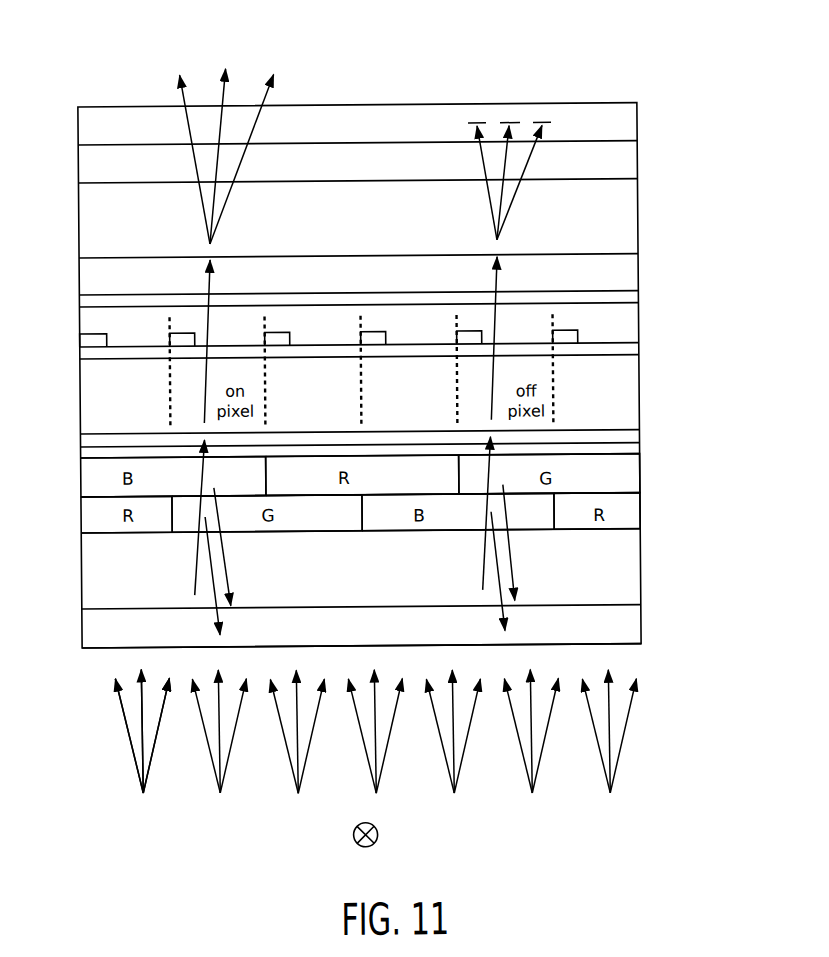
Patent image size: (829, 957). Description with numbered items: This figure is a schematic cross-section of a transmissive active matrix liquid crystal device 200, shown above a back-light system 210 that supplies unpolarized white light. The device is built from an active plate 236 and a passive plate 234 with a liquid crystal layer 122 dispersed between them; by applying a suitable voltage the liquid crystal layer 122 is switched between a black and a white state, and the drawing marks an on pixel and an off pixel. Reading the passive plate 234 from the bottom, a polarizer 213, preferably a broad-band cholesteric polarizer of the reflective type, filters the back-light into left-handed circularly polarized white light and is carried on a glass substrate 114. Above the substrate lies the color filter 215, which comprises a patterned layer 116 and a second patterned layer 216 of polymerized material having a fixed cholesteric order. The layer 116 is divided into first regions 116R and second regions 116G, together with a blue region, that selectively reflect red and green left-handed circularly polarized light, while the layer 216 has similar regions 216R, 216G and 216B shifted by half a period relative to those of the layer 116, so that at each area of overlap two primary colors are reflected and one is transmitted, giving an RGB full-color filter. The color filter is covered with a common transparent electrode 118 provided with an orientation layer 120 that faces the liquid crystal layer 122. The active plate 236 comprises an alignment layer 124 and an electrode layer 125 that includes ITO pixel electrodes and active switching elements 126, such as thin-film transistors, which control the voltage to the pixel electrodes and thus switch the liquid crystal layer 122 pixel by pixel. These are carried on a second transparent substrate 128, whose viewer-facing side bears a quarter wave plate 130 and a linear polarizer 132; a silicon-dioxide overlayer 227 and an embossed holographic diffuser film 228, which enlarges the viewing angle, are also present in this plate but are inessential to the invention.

The transmissive active matrix liquid crystal device 200 is at (70, 95).
The linear polarizer 132 is at (627, 126).
The quarter wave plate 130 is at (627, 164).
The second transparent substrate 128 is at (627, 224).
The embossed holographic diffuser film 228 is at (627, 280).
The silicon-dioxide overlayer 227 is at (627, 308).
The electrode layer 125 is at (627, 334).
The alignment layer 124 is at (627, 360).
The active switching elements 126 is at (85, 341).
The liquid crystal layer 122 is at (626, 398).
The orientation layer 120 is at (627, 440).
The common transparent electrode 118 is at (627, 456).
The patterned layer 216 is at (627, 478).
The patterned layer 116 is at (627, 514).
The glass substrate 114 is at (627, 594).
The polarizer 213 is at (627, 626).
The active plate 236 is at (729, 107).
The passive plate 234 is at (731, 431).
The color filter 215 is at (698, 470).
The back-light system 210 is at (375, 837).
The blue region 216B is at (95, 479).
The red region 216R is at (382, 482).
The green region 216G is at (561, 481).
The first region 116R is at (95, 516).
The second region 116G is at (316, 527).